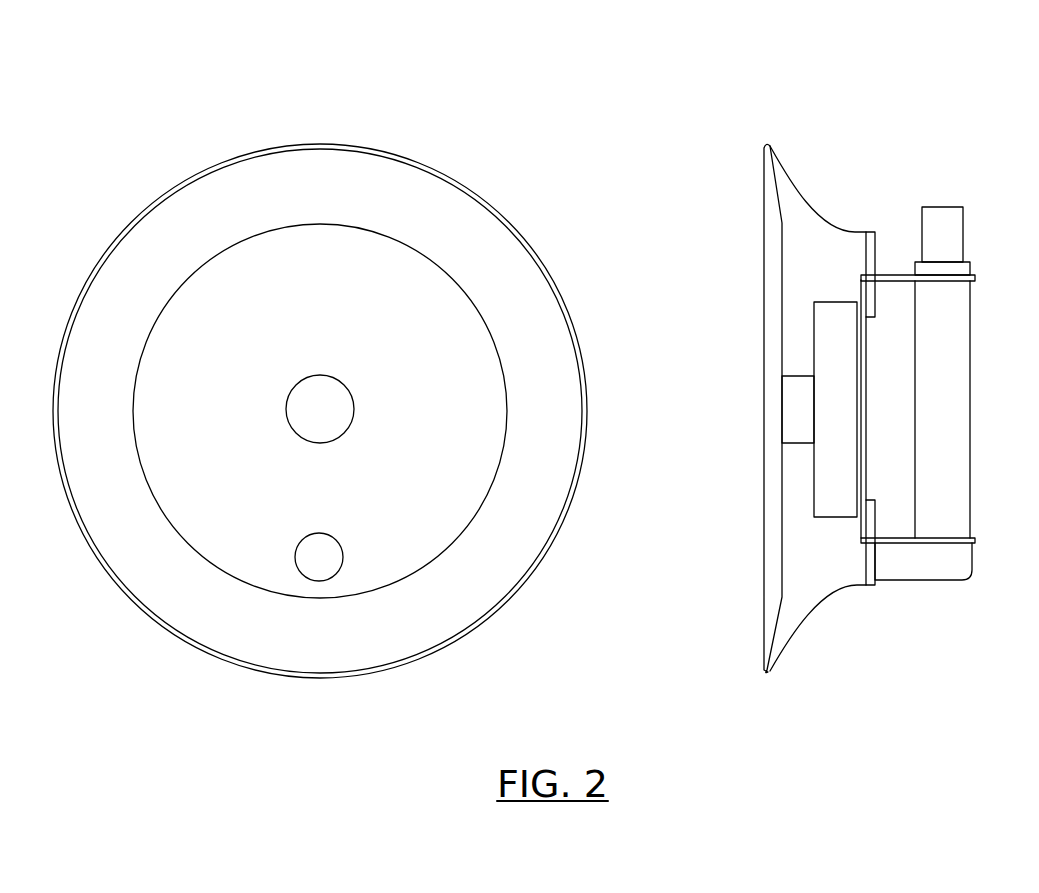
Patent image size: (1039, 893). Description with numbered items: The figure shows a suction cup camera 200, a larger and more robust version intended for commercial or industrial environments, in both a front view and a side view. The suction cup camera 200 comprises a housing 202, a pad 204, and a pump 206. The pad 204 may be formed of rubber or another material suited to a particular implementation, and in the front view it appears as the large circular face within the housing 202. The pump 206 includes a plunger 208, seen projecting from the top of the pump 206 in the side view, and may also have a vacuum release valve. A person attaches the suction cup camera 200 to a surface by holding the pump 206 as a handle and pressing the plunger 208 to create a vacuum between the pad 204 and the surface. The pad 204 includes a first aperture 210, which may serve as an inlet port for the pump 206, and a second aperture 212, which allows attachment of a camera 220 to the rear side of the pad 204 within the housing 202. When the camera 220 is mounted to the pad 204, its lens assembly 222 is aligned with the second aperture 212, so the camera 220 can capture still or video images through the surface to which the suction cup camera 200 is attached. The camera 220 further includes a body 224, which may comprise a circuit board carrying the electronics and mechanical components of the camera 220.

The suction cup camera 200 is at (205, 64).
The housing 202 is at (203, 164).
The pad 204 is at (336, 200).
The pump 206 is at (970, 405).
The plunger 208 is at (949, 206).
The first aperture 210 is at (313, 535).
The second aperture 212 is at (305, 378).
The camera 220 is at (833, 302).
The lens assembly 222 is at (798, 409).
The body 224 is at (835, 409).